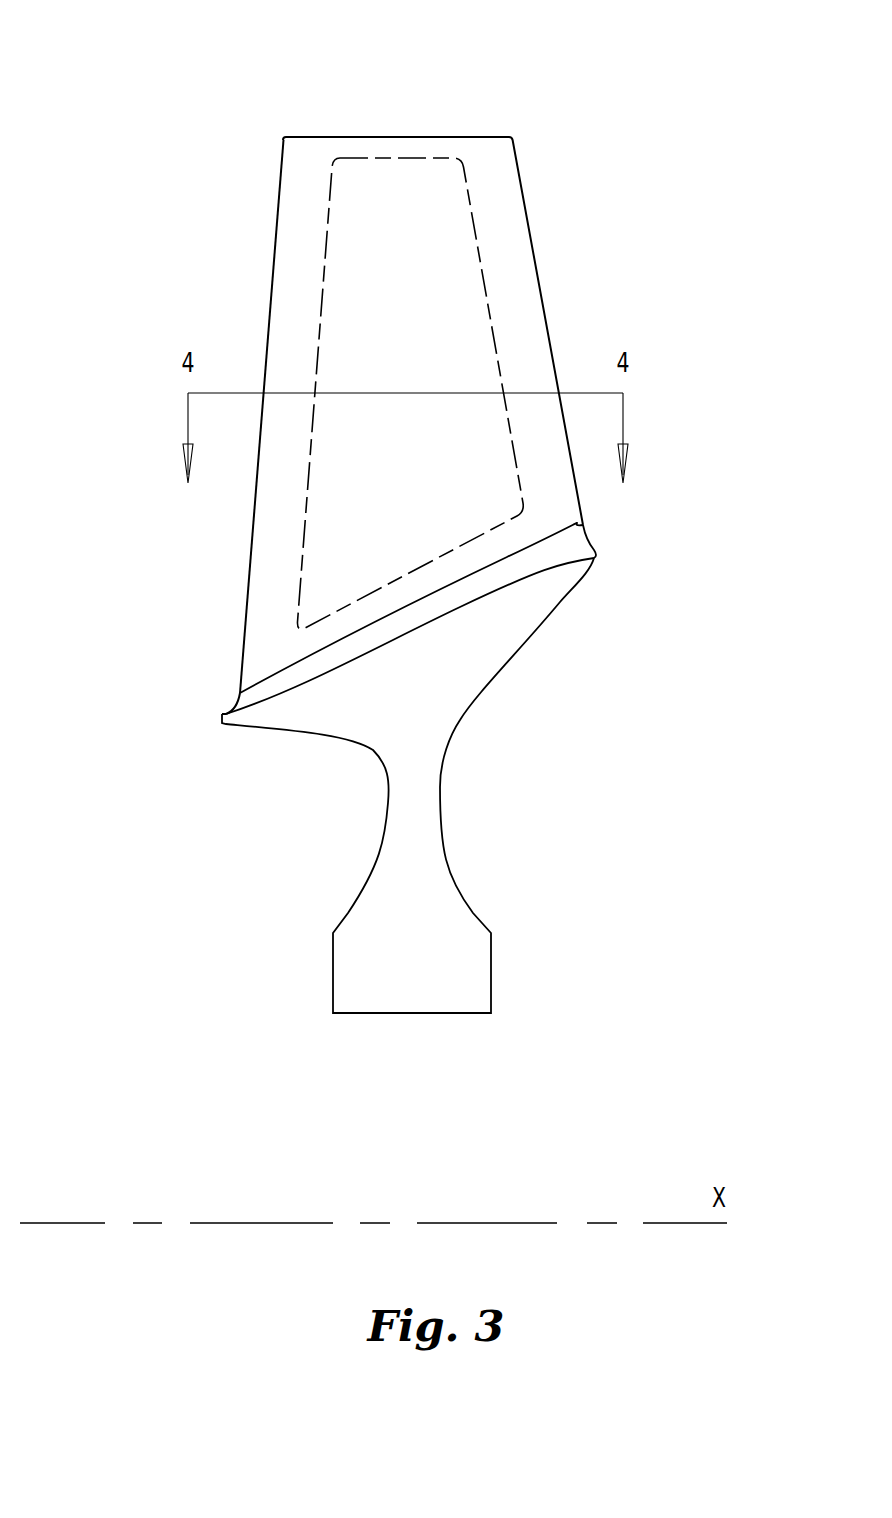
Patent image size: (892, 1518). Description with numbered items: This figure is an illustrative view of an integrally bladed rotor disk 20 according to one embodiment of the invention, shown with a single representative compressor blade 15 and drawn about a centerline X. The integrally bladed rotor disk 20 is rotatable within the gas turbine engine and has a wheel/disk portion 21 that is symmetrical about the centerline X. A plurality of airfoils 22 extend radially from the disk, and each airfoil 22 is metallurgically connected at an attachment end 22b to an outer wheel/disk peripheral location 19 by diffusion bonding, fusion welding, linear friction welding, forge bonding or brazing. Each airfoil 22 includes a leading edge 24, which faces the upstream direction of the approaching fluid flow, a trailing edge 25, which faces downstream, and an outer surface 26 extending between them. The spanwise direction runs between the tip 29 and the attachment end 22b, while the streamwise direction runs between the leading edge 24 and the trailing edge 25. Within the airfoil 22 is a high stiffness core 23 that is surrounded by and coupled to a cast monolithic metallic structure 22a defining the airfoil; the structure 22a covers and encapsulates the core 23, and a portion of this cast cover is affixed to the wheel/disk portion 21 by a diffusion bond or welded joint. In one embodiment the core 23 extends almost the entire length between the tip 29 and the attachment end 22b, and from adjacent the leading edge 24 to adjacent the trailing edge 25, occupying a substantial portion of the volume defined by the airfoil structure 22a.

The compressor blade 15 is at (538, 279).
The outer wheel/disk peripheral location 19 is at (573, 546).
The integrally bladed rotor disk 20 is at (655, 563).
The wheel/disk portion 21 is at (427, 817).
The airfoil 22 is at (265, 533).
The cast metallic structure 22a is at (295, 151).
The attachment end 22b is at (251, 672).
The high stiffness core 23 is at (450, 263).
The leading edge 24 is at (268, 307).
The trailing edge 25 is at (544, 315).
The outer surface 26 is at (507, 275).
The tip 29 is at (327, 136).